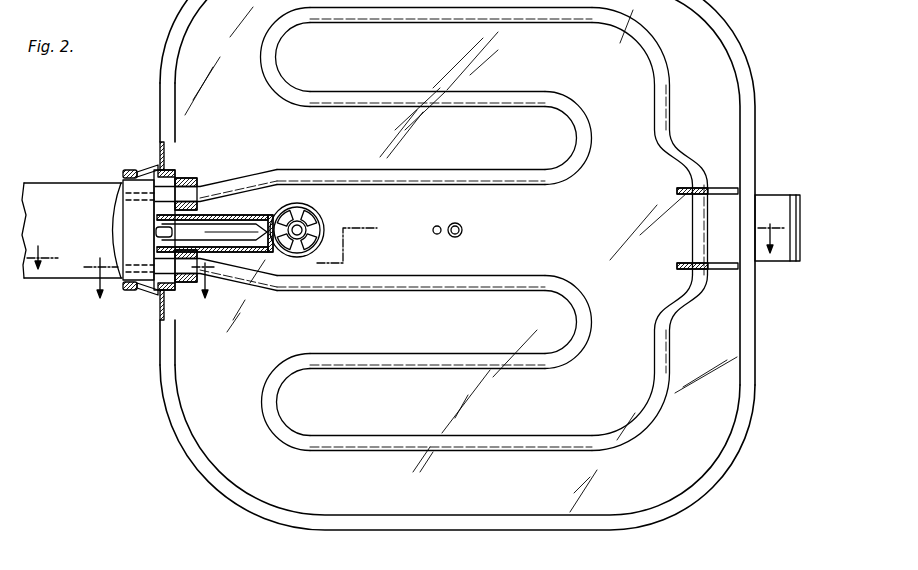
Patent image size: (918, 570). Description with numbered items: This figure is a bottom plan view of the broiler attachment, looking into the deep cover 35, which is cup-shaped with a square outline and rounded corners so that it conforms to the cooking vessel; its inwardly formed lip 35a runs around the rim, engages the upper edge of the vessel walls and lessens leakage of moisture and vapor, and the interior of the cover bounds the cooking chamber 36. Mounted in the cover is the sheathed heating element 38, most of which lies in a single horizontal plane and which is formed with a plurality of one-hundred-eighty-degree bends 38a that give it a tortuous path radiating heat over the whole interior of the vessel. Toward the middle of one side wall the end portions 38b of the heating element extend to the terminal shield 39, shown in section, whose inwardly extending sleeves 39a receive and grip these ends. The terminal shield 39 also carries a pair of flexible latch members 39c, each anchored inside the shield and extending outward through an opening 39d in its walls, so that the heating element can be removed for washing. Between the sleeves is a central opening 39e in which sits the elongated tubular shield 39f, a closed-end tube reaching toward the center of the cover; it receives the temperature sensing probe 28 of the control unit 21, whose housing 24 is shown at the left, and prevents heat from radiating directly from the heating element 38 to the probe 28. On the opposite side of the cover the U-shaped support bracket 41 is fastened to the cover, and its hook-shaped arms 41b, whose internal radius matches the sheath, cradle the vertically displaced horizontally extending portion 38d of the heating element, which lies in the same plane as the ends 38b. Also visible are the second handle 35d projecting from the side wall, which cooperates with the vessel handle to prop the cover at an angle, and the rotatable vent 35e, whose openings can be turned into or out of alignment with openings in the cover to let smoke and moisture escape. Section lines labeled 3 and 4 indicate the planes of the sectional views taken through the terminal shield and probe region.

The section line 3- 3 is at (406, 237).
The section line 4- 4 is at (230, 277).
The control unit 21 is at (50, 283).
The housing 24 is at (57, 190).
The temperature sensing probe 28 is at (237, 224).
The cover 35 is at (692, 484).
The lip 35a is at (336, 517).
The second handle 35d is at (780, 261).
The rotatable vent 35e is at (323, 228).
The cooking chamber 36 is at (541, 241).
The sheathed heating element 38 is at (503, 436).
The 180 degree bends 38a is at (280, 69).
The end portions 38b is at (205, 188).
The vertically displaced horizontally extending portion 38d is at (692, 184).
The terminal shield 39 is at (172, 172).
The sleeves 39a is at (186, 178).
The flexible latch members 39c is at (158, 168).
The opening 39d is at (136, 172).
The central opening 39e is at (158, 233).
The tubular shield 39f is at (234, 249).
The support bracket 41 is at (720, 186).
The hook-shaped arms 41b is at (678, 266).